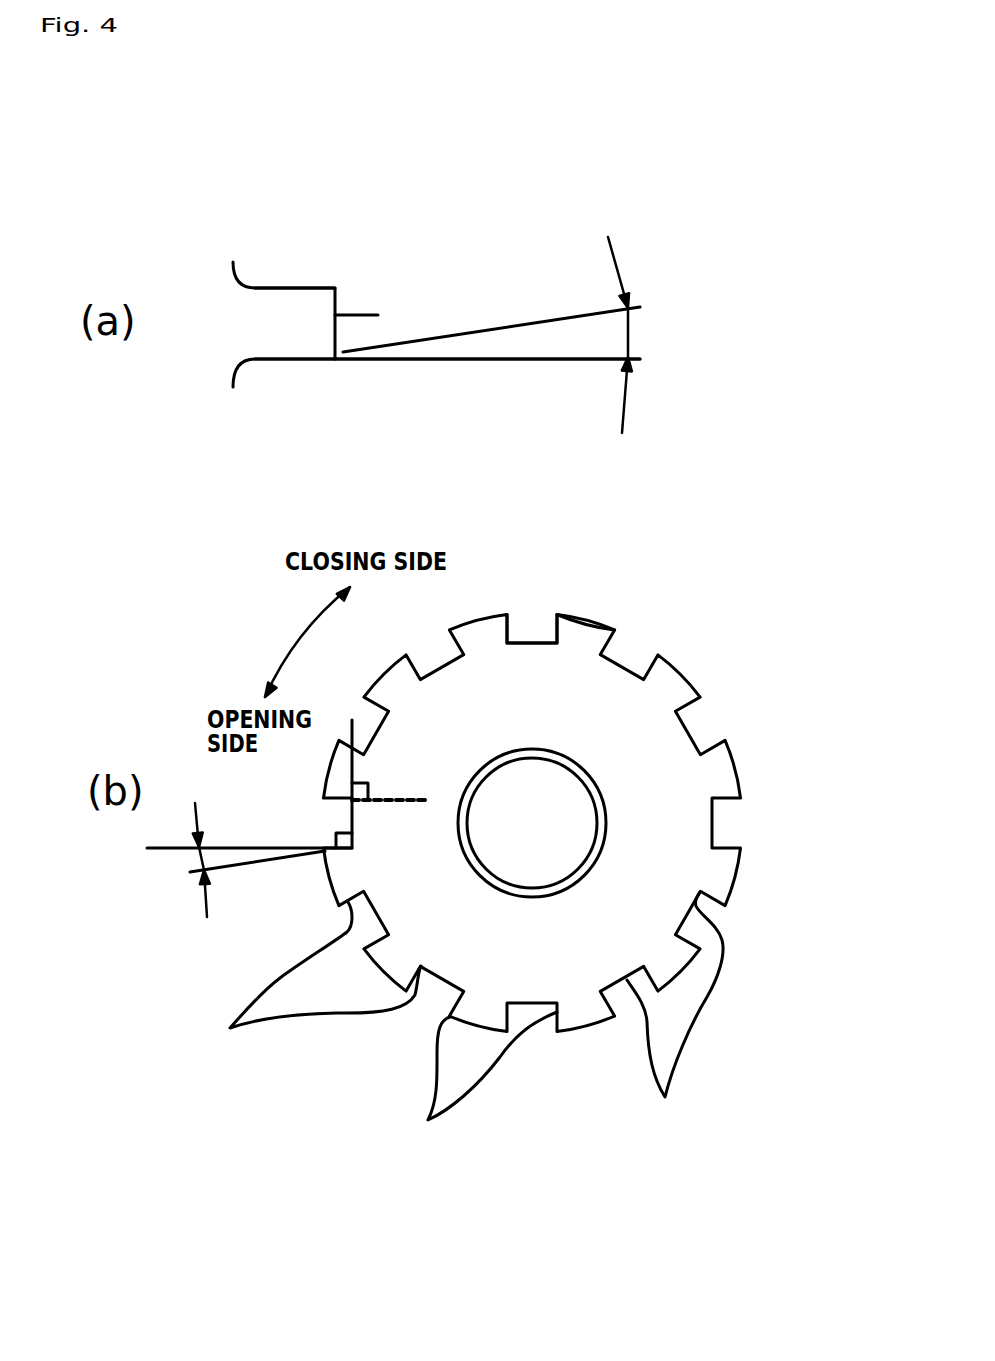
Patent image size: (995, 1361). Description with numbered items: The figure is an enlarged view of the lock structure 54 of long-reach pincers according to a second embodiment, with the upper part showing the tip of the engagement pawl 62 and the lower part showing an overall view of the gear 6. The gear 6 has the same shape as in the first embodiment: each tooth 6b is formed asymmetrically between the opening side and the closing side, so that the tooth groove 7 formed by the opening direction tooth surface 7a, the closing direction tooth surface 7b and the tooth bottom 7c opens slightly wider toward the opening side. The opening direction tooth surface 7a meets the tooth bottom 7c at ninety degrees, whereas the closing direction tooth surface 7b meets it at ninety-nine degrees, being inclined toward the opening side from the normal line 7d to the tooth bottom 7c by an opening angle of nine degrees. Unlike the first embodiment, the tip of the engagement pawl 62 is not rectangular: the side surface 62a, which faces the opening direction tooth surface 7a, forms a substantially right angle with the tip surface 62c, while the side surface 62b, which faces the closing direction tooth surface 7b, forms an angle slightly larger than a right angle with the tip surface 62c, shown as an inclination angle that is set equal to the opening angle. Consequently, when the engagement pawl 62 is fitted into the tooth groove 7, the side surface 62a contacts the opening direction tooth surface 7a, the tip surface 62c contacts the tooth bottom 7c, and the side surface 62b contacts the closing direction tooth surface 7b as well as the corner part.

The engagement pawl 62 is at (358, 262).
The side surface 62a is at (300, 287).
The side surface 62b is at (293, 360).
The tip surface 62c is at (378, 315).
The lock structure 54 is at (628, 514).
The gear 6 is at (627, 738).
The tooth 6b is at (588, 615).
The tooth groove 7 is at (531, 628).
The opening direction tooth surface 7a is at (298, 988).
The closing direction tooth surface 7b is at (468, 1091).
The tooth bottom 7c is at (675, 1021).
The normal line 7d is at (233, 847).